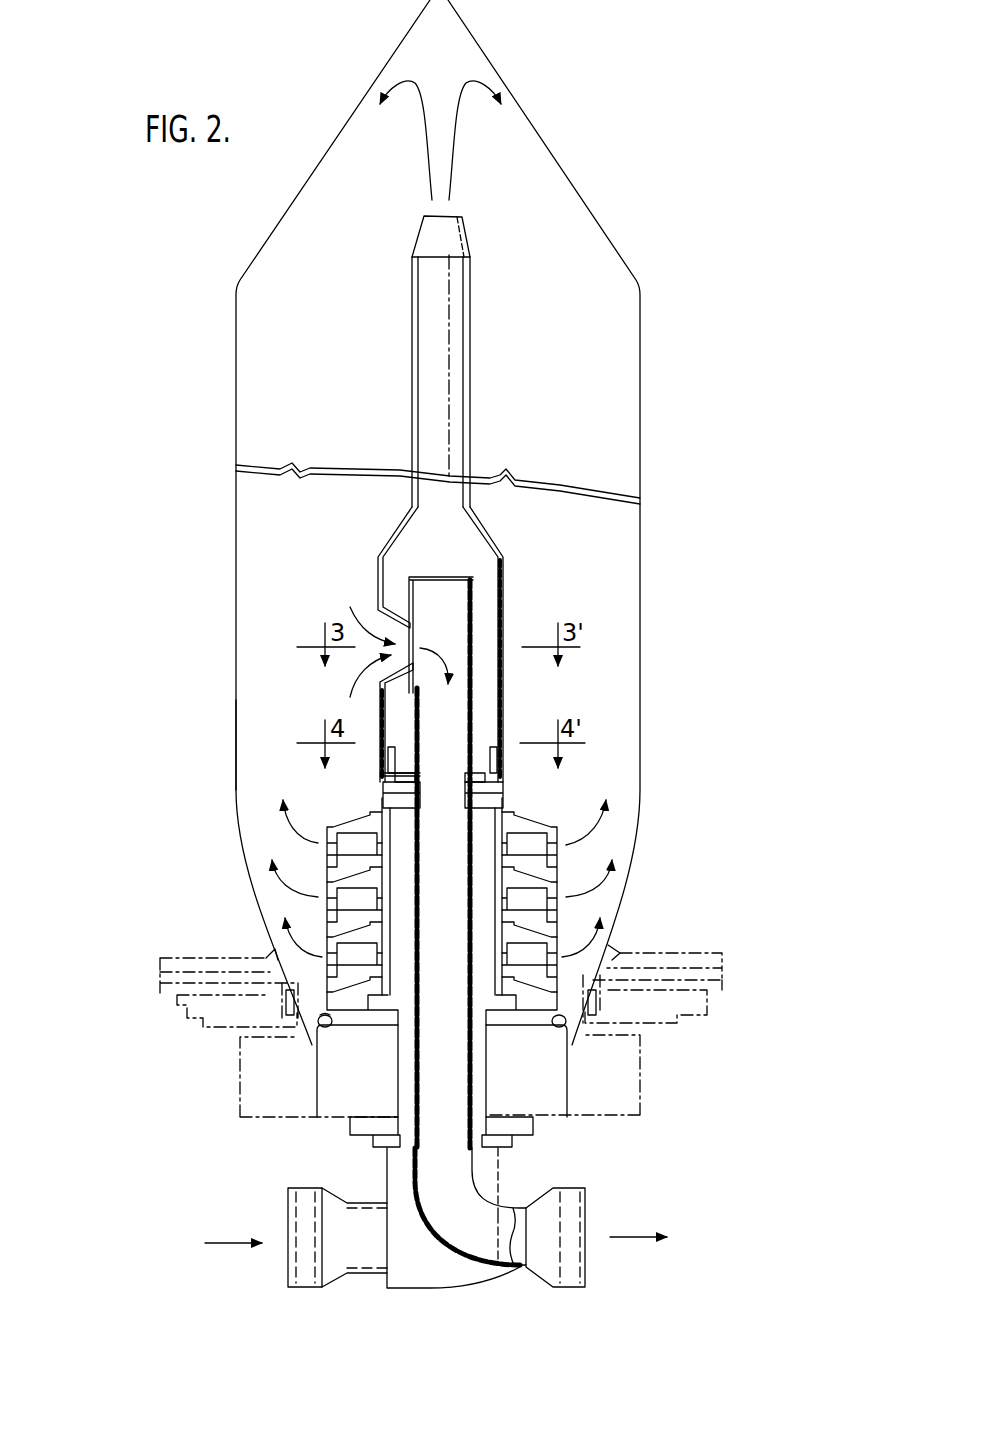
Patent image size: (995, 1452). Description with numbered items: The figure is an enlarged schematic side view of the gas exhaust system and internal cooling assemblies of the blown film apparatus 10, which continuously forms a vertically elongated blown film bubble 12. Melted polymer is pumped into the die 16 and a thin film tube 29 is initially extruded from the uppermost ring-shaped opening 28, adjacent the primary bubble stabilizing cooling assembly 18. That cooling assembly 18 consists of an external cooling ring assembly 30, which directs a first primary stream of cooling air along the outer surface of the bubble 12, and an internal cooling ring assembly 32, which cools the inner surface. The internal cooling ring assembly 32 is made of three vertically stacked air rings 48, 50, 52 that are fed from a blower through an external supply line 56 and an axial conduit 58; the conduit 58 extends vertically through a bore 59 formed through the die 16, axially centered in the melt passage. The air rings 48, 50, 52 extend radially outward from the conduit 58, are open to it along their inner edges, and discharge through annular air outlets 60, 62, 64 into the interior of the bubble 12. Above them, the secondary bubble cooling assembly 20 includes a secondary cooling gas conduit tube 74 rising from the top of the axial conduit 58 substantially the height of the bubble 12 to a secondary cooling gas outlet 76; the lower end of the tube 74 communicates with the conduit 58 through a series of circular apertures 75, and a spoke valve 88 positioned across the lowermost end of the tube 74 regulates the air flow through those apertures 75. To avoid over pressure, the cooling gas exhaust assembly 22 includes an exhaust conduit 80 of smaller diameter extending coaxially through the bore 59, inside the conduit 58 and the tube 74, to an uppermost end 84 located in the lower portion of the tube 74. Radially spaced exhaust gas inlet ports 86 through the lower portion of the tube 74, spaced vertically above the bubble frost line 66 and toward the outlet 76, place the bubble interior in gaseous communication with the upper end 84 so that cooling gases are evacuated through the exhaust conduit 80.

The apparatus 10 is at (680, 1094).
The blown film bubble 12 is at (232, 568).
The die 16 is at (247, 1095).
The primary bubble stabilizing cooling assembly 18 is at (612, 946).
The secondary bubble cooling assembly 20 is at (472, 552).
The cooling gas exhaust assembly 22 is at (445, 705).
The ring-shaped opening 28 is at (328, 1030).
The thin film tube 29 is at (318, 1002).
The external cooling ring assembly 30 is at (160, 962).
The internal cooling ring assembly 32 is at (338, 808).
The air ring 48 is at (334, 937).
The air ring 50 is at (333, 881).
The air ring 52 is at (368, 815).
The external supply line 56 is at (363, 1262).
The axial conduit 58 is at (490, 822).
The bore 59 is at (500, 1112).
The annular air outlet 60 is at (529, 1002).
The annular air outlet 62 is at (550, 910).
The annular air outlet 64 is at (558, 843).
The bubble frost line 66 is at (236, 797).
The secondary cooling gas conduit tube 74 is at (462, 405).
The circular apertures 75 is at (482, 768).
The secondary cooling gas outlet 76 is at (458, 240).
The exhaust conduit 80 is at (437, 1043).
The uppermost end 84 is at (447, 595).
The exhaust gas inlet ports 86 is at (398, 624).
The spoke valve 88 is at (383, 782).